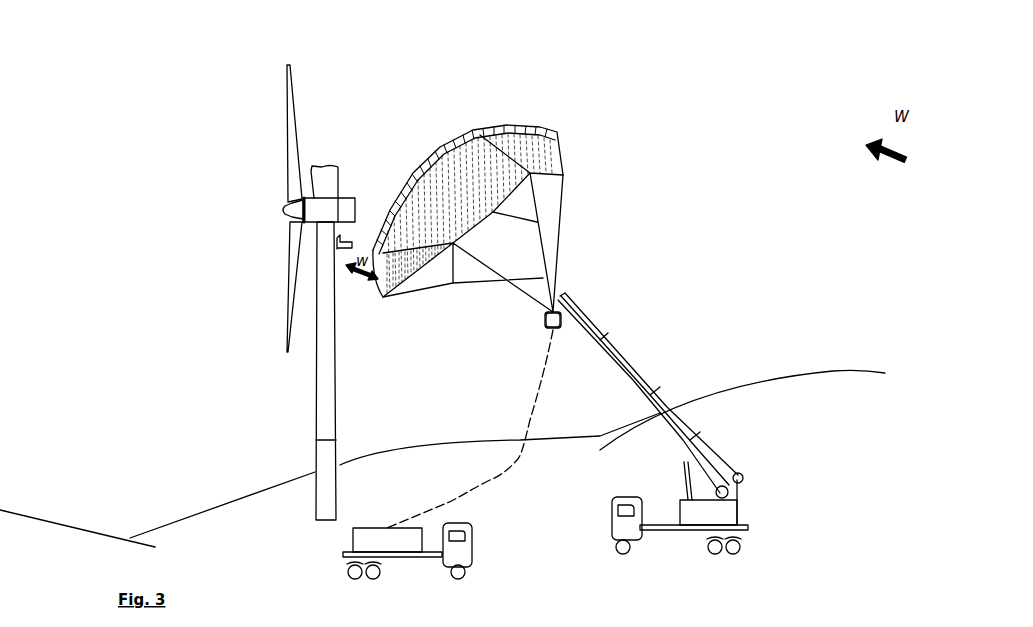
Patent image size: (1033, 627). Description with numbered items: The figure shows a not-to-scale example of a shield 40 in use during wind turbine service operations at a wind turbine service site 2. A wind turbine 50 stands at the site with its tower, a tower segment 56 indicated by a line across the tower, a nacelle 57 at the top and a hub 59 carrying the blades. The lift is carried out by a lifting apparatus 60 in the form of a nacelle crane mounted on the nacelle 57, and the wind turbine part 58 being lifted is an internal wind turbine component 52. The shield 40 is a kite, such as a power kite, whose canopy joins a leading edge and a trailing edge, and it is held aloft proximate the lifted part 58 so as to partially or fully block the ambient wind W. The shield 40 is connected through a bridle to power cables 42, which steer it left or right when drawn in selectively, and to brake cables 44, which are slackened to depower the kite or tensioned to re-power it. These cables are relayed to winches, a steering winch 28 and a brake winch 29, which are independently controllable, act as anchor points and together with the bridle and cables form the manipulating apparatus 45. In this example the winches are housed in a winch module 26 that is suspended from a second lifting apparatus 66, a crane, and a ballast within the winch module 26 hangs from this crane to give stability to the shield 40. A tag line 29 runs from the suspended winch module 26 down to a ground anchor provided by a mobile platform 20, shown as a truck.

The wind turbine service site 2 is at (150, 85).
The mobile platform 20 is at (335, 570).
The winch module 26 is at (550, 329).
The steering winch 28 is at (548, 320).
The brake winch 29 is at (490, 480).
The shield 40 is at (513, 137).
The power cables 42 is at (553, 270).
The brake cables 44 is at (553, 200).
The manipulating apparatus 45 is at (497, 309).
The wind turbine 50 is at (237, 262).
The internal wind turbine component 52 is at (338, 240).
The tower segment 56 is at (318, 460).
The nacelle 57 is at (348, 198).
The wind turbine part 58 is at (362, 292).
The hub 59 is at (285, 208).
The lifting apparatus 60 is at (320, 167).
The second lifting apparatus 66 is at (745, 509).